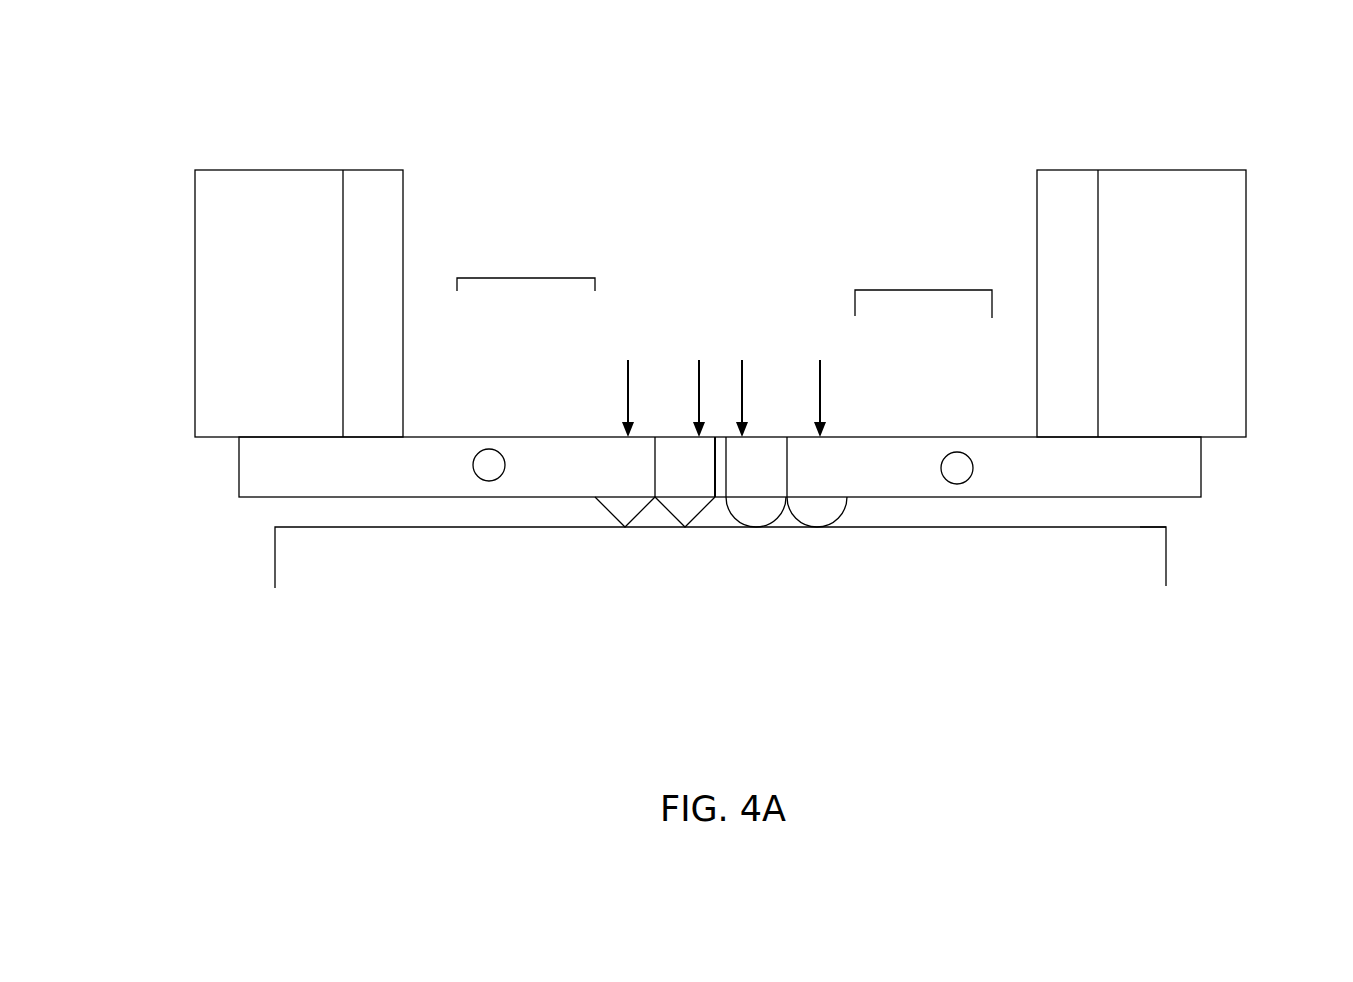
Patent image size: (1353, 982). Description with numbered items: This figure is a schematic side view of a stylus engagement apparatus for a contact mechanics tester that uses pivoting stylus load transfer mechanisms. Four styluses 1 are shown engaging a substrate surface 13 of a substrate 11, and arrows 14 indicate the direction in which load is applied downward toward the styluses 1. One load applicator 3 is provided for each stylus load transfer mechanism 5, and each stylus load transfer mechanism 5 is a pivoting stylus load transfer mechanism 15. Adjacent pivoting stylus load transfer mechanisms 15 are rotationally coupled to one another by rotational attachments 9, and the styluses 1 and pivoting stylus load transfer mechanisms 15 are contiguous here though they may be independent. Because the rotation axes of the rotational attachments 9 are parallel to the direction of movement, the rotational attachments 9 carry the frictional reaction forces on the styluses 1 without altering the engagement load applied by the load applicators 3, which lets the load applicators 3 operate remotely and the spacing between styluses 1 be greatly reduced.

The stylus 1 is at (610, 520).
The load applicator 3 is at (253, 268).
The stylus load transfer mechanism 5 is at (526, 278).
The rotational attachment 9 is at (489, 463).
The substrate board 11 is at (1168, 556).
The substrate surface 13 is at (1148, 518).
The pressing direction 14 is at (740, 367).
The pivoting stylus load transfer mechanism 15 is at (571, 465).